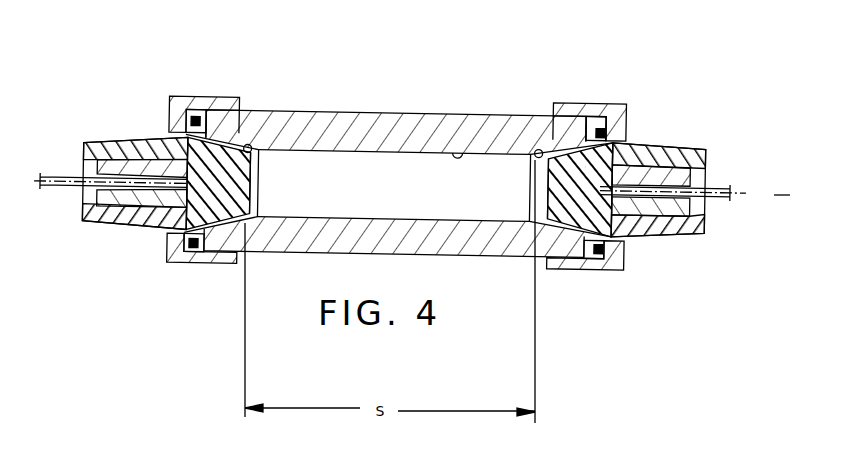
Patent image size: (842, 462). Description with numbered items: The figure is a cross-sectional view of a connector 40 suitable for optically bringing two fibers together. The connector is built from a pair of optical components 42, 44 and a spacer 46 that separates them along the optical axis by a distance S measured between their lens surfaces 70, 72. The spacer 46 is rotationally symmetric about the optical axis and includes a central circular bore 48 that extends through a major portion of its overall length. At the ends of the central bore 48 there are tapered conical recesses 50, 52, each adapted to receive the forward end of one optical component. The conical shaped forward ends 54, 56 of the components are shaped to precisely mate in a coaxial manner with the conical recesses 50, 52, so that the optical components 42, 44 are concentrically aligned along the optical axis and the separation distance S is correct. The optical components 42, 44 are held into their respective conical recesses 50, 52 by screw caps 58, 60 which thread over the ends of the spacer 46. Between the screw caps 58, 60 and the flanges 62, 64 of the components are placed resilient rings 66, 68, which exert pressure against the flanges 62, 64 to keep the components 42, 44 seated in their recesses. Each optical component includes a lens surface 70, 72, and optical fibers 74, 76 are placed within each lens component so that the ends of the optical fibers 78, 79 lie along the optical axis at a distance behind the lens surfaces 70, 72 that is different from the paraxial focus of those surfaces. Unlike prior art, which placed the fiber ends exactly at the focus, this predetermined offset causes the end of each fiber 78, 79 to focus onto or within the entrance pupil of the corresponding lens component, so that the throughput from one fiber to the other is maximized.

The connector 40 is at (445, 86).
The optical component 42 is at (100, 143).
The optical component 44 is at (673, 146).
The spacer 46 is at (379, 127).
The central circular bore 48 is at (474, 118).
The conical recess 50 is at (251, 147).
The conical recess 52 is at (531, 150).
The conical shaped forward end 54 is at (228, 99).
The conical shaped forward end 56 is at (574, 118).
The screw cap 58 is at (182, 96).
The screw cap 60 is at (559, 101).
The flange 62 is at (199, 128).
The flange 64 is at (600, 132).
The resilient ring 66 is at (186, 122).
The resilient ring 68 is at (618, 129).
The lens surface 70 is at (256, 176).
The lens surface 72 is at (544, 178).
The optical fiber 74 is at (62, 178).
The optical fiber 76 is at (714, 188).
The end of optical fiber 78 is at (150, 227).
The end of optical fiber 79 is at (619, 238).